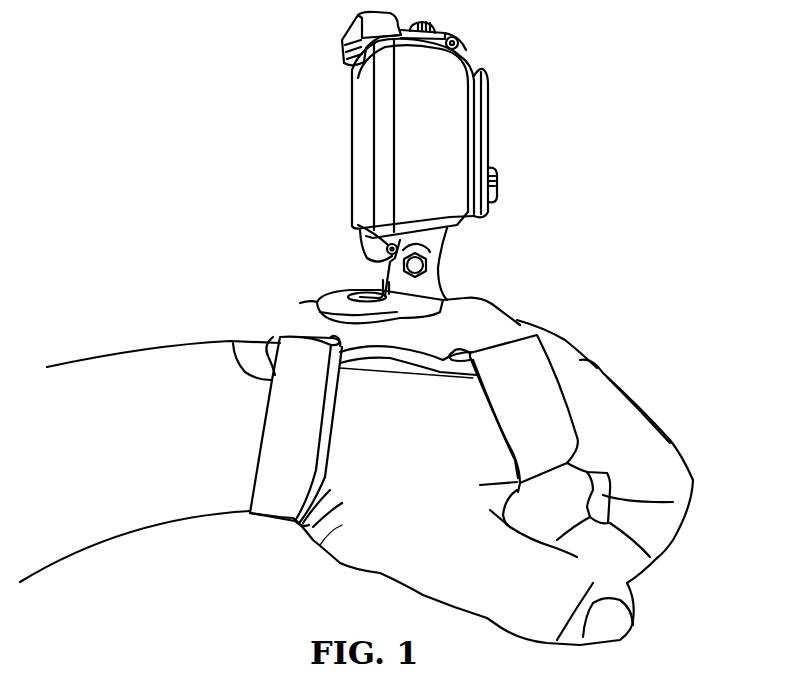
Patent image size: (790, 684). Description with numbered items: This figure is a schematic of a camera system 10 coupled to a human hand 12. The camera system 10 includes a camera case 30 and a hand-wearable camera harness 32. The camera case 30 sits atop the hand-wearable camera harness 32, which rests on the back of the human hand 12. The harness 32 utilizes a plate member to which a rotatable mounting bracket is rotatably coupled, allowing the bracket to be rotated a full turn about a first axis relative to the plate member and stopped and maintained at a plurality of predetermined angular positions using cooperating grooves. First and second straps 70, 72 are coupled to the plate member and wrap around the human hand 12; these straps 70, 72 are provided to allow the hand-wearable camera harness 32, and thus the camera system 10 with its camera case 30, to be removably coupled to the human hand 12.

The camera system 10 is at (610, 160).
The human hand 12 is at (617, 413).
The camera case 30 is at (460, 44).
The hand-wearable camera harness 32 is at (498, 298).
The first strap 70 is at (266, 352).
The second strap 72 is at (562, 352).